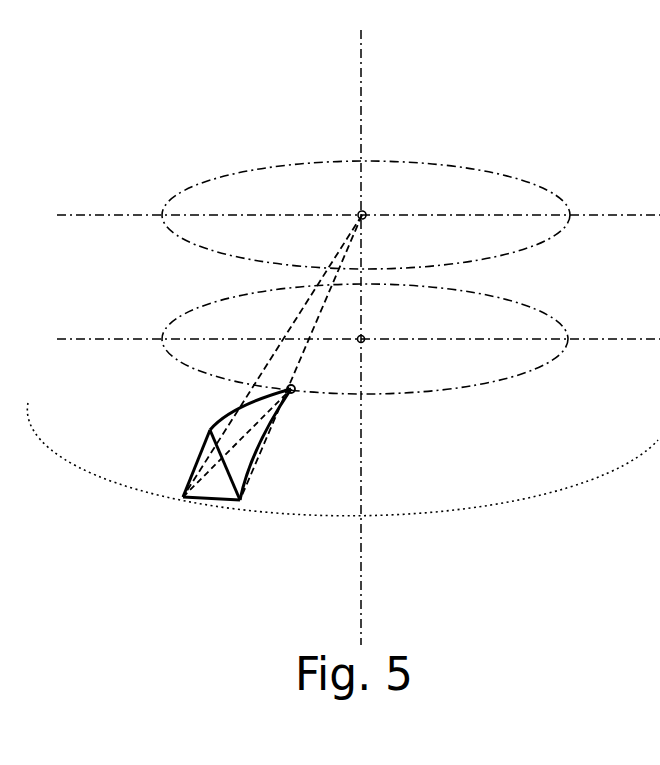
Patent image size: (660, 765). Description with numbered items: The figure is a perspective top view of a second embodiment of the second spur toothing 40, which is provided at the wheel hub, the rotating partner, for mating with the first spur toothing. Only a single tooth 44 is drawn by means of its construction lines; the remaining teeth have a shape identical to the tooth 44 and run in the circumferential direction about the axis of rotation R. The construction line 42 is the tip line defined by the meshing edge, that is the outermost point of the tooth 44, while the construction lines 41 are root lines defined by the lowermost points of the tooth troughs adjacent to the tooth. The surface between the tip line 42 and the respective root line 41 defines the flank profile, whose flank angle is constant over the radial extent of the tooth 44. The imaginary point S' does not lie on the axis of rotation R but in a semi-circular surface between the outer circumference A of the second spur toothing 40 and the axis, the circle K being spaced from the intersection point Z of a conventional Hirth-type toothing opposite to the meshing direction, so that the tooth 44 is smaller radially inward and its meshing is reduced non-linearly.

The second spur toothing 40 is at (478, 130).
The construction line 41 is at (228, 430).
The construction line 42 is at (216, 419).
The tooth 44 is at (212, 502).